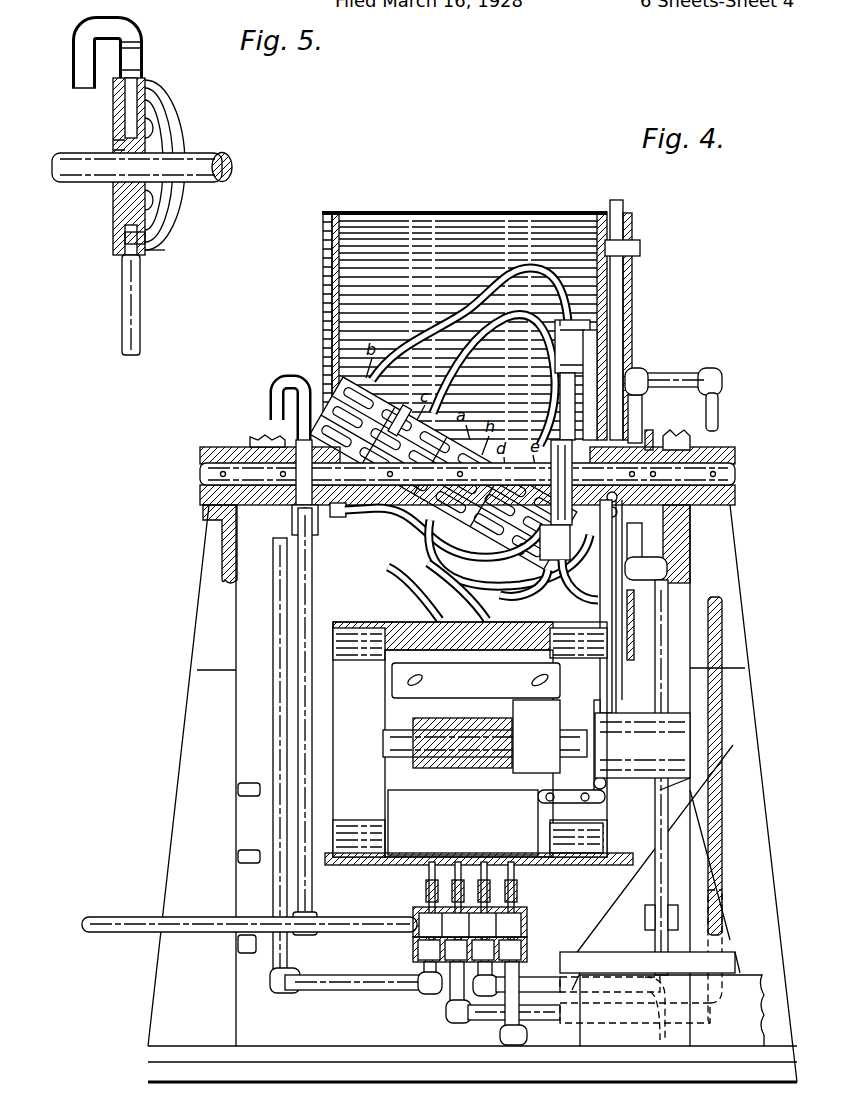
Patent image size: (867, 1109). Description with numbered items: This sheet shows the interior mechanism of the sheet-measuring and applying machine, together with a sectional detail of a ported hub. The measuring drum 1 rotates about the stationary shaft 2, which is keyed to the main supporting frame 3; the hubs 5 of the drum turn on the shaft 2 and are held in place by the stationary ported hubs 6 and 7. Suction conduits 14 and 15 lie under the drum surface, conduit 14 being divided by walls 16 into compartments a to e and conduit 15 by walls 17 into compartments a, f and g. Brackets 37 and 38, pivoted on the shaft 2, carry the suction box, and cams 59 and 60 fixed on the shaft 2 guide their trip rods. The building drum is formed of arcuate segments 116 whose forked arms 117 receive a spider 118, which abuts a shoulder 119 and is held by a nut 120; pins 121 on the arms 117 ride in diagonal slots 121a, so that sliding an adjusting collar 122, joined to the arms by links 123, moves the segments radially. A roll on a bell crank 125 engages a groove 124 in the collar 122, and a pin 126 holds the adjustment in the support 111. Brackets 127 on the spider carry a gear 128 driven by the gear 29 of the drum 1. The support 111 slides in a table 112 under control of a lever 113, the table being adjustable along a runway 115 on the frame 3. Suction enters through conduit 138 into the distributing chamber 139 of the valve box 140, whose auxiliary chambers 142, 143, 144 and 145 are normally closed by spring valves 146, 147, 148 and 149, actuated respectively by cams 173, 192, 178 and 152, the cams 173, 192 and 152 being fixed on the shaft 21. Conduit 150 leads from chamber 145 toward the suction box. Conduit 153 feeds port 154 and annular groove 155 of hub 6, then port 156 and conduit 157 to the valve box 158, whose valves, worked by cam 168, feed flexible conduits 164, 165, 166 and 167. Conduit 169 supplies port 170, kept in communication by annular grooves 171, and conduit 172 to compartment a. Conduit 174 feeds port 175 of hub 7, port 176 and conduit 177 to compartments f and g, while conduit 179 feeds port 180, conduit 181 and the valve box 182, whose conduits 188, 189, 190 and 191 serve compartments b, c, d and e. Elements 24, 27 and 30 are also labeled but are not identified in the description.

In FIG. 4, the measuring drum 1 is at (520, 212).
In FIG. 5, the stationary shaft 2 is at (230, 158).
In FIG. 4, the stationary shaft 2 is at (740, 474).
In FIG. 4, the main supporting frame 3 is at (730, 555).
In FIG. 4, the hubs 5 is at (356, 440).
In FIG. 5, the ported hub 6 is at (113, 140).
In FIG. 4, the ported hub 6 is at (278, 440).
In FIG. 4, the ported hub 7 is at (648, 430).
In FIG. 4, the suction conduit 14 is at (347, 376).
In FIG. 4, the suction conduit 15 is at (416, 480).
In FIG. 4, the transversely extending walls 16 is at (406, 404).
In FIG. 4, the transversely extending walls 17 is at (455, 486).
In FIG. 4, the shaft 21 is at (250, 850).
In FIG. 4, the stud 24 is at (247, 953).
In FIG. 4, the stud 27 is at (262, 770).
In FIG. 4, the gear 29 is at (632, 230).
In FIG. 4, the pipe 30 is at (614, 230).
In FIG. 4, the bracket 37 is at (240, 447).
In FIG. 4, the bracket 38 is at (718, 414).
In FIG. 4, the cam 59 is at (262, 440).
In FIG. 4, the cam 60 is at (676, 436).
In FIG. 4, the support 111 is at (722, 925).
In FIG. 4, the table 112 is at (735, 965).
In FIG. 4, the lever 113 is at (668, 878).
In FIG. 4, the runway 115 is at (765, 1010).
In FIG. 4, the arcuate segments 116 is at (378, 628).
In FIG. 4, the forked arms 117 is at (393, 686).
In FIG. 4, the spider 118 is at (425, 772).
In FIG. 4, the shoulder 119 is at (395, 797).
In FIG. 4, the nut 120 is at (420, 730).
In FIG. 4, the pins 121 is at (426, 803).
In FIG. 4, the slots 121a is at (425, 680).
In FIG. 4, the adjusting collar 122 is at (600, 712).
In FIG. 4, the links 123 is at (556, 790).
In FIG. 4, the groove 124 is at (632, 735).
In FIG. 4, the bell crank 125 is at (625, 760).
In FIG. 4, the pin 126 is at (690, 778).
In FIG. 4, the brackets 127 is at (602, 860).
In FIG. 4, the gear 128 is at (636, 642).
In FIG. 4, the conduit 138 is at (118, 917).
In FIG. 4, the distributing chamber 139 is at (527, 926).
In FIG. 4, the valve box 140 is at (527, 942).
In FIG. 4, the auxiliary chamber 142 is at (418, 950).
In FIG. 4, the auxiliary chamber 143 is at (450, 990).
In FIG. 4, the auxiliary chamber 144 is at (468, 1018).
In FIG. 4, the auxiliary chamber 145 is at (527, 958).
In FIG. 4, the spring actuated valve 146 is at (426, 902).
In FIG. 4, the spring actuated valve 147 is at (426, 890).
In FIG. 4, the spring actuated valve 148 is at (516, 892).
In FIG. 4, the spring actuated valve 149 is at (518, 902).
In FIG. 4, the conduit 150 is at (512, 1046).
In FIG. 4, the cam 152 is at (552, 836).
In FIG. 5, the conduit 153 is at (124, 340).
In FIG. 4, the conduit 153 is at (285, 645).
In FIG. 5, the port 154 is at (113, 245).
In FIG. 4, the port 154 is at (298, 560).
In FIG. 5, the annular groove 155 is at (170, 218).
In FIG. 4, the port 156 is at (378, 514).
In FIG. 4, the conduit 157 is at (438, 556).
In FIG. 4, the valve box 158 is at (569, 520).
In FIG. 4, the flexible conduit 164 is at (418, 592).
In FIG. 4, the flexible conduit 165 is at (455, 588).
In FIG. 4, the flexible conduit 166 is at (524, 602).
In FIG. 4, the flexible conduit 167 is at (668, 590).
In FIG. 4, the cam 168 is at (560, 380).
In FIG. 5, the conduit 169 is at (140, 22).
In FIG. 4, the conduit 169 is at (318, 992).
In FIG. 5, the port 170 is at (113, 105).
In FIG. 4, the port 170 is at (292, 525).
In FIG. 5, the annular grooves 171 is at (165, 137).
In FIG. 4, the conduit 172 is at (392, 540).
In FIG. 4, the cam 173 is at (424, 858).
In FIG. 4, the conduit 174 is at (672, 1020).
In FIG. 4, the port 175 is at (618, 515).
In FIG. 4, the port 176 is at (642, 545).
In FIG. 4, the conduit 177 is at (505, 560).
In FIG. 4, the cam 178 is at (528, 838).
In FIG. 4, the conduit 179 is at (722, 745).
In FIG. 4, the port 180 is at (648, 372).
In FIG. 4, the conduit 181 is at (590, 345).
In FIG. 4, the valve box 182 is at (570, 326).
In FIG. 4, the conduit 188 is at (452, 324).
In FIG. 4, the conduit 189 is at (495, 345).
In FIG. 4, the conduit 190 is at (548, 398).
In FIG. 4, the conduit 191 is at (544, 425).
In FIG. 4, the cam 192 is at (456, 865).